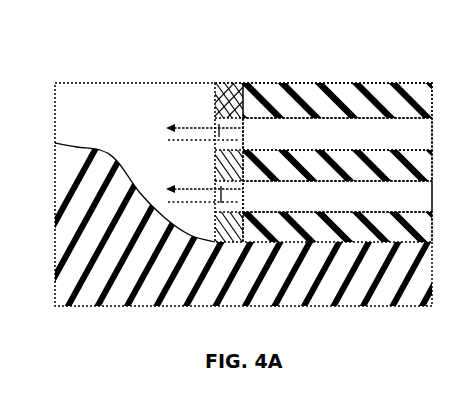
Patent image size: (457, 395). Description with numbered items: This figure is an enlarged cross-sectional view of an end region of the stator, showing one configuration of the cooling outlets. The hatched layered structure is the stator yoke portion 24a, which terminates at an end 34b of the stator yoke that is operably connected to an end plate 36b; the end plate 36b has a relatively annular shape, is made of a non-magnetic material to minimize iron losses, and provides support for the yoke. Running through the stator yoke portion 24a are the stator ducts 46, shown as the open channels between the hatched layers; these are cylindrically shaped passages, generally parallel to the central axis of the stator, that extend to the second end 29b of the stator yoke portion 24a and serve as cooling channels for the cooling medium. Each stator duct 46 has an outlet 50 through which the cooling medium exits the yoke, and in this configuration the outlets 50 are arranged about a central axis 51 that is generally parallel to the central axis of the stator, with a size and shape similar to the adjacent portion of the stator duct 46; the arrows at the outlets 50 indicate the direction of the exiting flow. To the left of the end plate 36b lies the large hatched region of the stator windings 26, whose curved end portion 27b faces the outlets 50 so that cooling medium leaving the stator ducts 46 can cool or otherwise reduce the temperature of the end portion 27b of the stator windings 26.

The stator yoke portion 24a is at (355, 105).
The stator windings 26 is at (73, 148).
The end portion of the stator windings 27b is at (120, 162).
The second end of the stator yoke portion 29b is at (215, 100).
The end of the stator yoke 34b is at (280, 105).
The end plate 36b is at (228, 92).
The stator ducts 46 is at (400, 195).
The outlet 50 is at (218, 124).
The central axis 51 is at (240, 93).